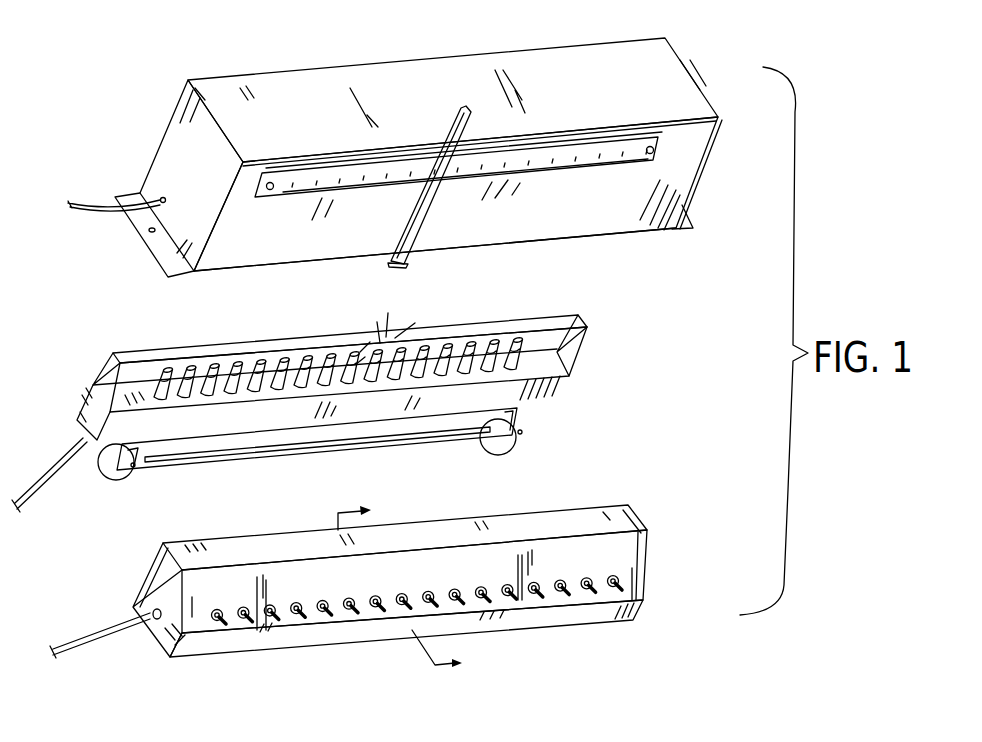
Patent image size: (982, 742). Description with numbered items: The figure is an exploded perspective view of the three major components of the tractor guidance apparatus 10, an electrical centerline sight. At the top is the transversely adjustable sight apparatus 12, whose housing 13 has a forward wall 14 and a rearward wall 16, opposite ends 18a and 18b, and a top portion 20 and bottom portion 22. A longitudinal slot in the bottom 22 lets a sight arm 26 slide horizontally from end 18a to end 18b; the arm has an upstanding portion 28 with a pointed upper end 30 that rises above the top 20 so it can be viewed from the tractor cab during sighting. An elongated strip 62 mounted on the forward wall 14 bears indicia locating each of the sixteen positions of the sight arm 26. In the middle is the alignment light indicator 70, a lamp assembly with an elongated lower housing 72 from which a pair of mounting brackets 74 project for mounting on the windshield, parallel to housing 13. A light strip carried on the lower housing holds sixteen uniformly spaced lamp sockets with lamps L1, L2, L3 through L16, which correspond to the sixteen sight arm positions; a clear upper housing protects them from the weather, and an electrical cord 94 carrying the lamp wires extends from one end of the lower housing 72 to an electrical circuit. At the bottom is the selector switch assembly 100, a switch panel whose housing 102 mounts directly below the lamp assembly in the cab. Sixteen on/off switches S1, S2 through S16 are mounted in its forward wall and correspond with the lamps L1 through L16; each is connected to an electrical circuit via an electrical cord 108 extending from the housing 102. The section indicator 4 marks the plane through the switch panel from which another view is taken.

The tractor guidance apparatus 10 is at (63, 95).
The sight apparatus 12 is at (708, 42).
The housing 13 is at (472, 78).
The forward wall 14 is at (587, 223).
The rearward wall 16 is at (238, 76).
The end 18a is at (192, 148).
The end 18b is at (705, 90).
The top portion 20 is at (537, 133).
The bottom portion 22 is at (273, 270).
The sight arm 26 is at (407, 265).
The upstanding portion 28 is at (427, 222).
The pointed upper end 30 is at (460, 108).
The elongated strip 62 is at (326, 176).
The alignment light indicator 70 is at (625, 347).
The lower housing 72 is at (568, 390).
The mounting brackets 74 is at (522, 433).
The electrical cord 94 is at (45, 483).
The selector switch assembly 100 is at (657, 555).
The housing 102 is at (630, 512).
The electrical cord 108 is at (98, 634).
The section line 4- 4 is at (411, 587).
The electrical lamp L16 is at (170, 369).
The electrical lamp L3 is at (475, 342).
The electrical lamp L2 is at (498, 340).
The electrical lamp L1 is at (521, 338).
The on/off switch S16 is at (214, 621).
The on/off switch S2 is at (586, 590).
The on/off switch S1 is at (617, 595).